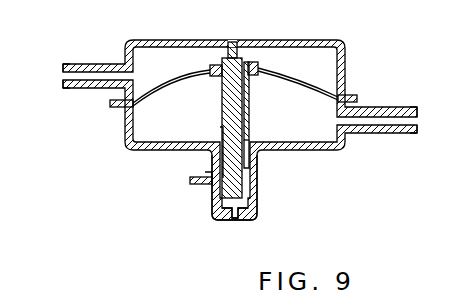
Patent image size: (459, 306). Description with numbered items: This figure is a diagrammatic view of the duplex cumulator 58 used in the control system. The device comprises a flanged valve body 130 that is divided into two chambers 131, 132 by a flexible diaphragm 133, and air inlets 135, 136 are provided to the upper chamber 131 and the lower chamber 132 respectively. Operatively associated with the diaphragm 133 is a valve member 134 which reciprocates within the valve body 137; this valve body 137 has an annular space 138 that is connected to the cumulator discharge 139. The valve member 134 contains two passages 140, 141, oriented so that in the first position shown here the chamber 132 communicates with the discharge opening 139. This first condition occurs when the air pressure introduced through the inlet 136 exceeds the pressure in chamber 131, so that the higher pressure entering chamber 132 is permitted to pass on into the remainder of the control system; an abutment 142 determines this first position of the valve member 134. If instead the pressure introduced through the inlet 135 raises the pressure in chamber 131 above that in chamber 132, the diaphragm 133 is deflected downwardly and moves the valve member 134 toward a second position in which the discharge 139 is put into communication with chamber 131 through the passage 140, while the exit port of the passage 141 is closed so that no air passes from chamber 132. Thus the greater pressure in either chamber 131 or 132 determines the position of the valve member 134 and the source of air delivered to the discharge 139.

The duplex cumulator 58 is at (152, 195).
The flanged valve body 130 is at (280, 40).
The chamber 131 is at (321, 72).
The chamber 132 is at (309, 127).
The flexible diaphragm 133 is at (297, 84).
The valve member 134 is at (221, 88).
The air inlet 135 is at (63, 89).
The air inlet 136 is at (398, 107).
The valve body 137 is at (256, 209).
The annular space 138 is at (250, 183).
The cumulator discharge 139 is at (203, 177).
The passage 140 is at (246, 57).
The passage 141 is at (220, 128).
The abutment 142 is at (230, 50).